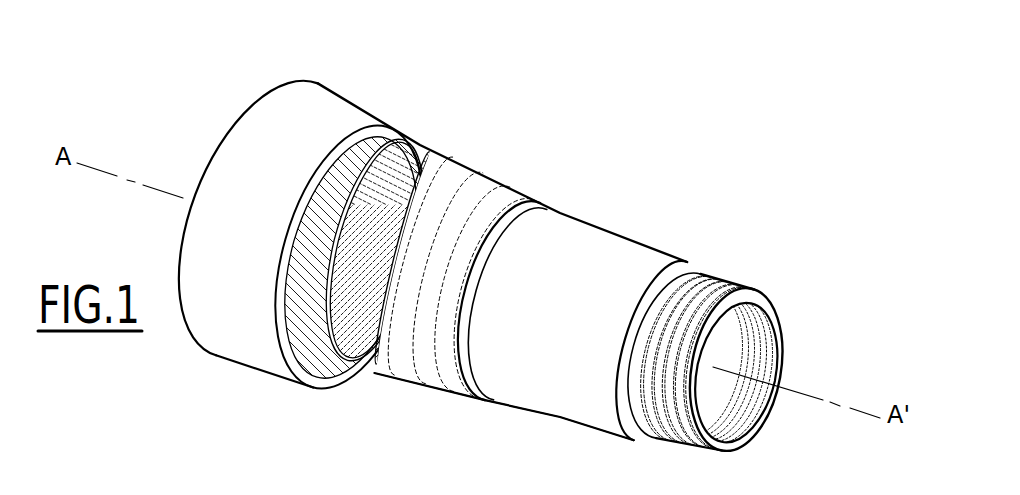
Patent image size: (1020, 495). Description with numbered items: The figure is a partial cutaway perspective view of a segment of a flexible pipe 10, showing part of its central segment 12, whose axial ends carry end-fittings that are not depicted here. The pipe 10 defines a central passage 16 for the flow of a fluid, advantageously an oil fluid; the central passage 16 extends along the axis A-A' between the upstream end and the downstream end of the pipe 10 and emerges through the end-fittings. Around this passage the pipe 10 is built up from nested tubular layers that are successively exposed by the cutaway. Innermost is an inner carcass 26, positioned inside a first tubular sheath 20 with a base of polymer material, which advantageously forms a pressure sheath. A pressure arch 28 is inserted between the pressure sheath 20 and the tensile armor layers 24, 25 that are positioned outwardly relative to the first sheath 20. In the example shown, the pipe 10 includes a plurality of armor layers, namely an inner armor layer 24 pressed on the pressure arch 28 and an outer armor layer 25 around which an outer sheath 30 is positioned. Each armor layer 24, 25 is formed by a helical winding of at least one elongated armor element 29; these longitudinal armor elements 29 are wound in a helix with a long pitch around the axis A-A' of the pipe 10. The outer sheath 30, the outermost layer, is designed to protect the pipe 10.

The flexible pipe 10 is at (635, 143).
The central segment 12 is at (495, 166).
The central passage 16 is at (745, 345).
The first tubular sheath 20 is at (603, 263).
The inner armor layer 24 is at (420, 160).
The outer armor layer 25 is at (372, 153).
The inner carcass 26 is at (715, 310).
The pressure arch 28 is at (488, 203).
The elongated armor element 29 is at (364, 338).
The outer sheath 30 is at (303, 128).